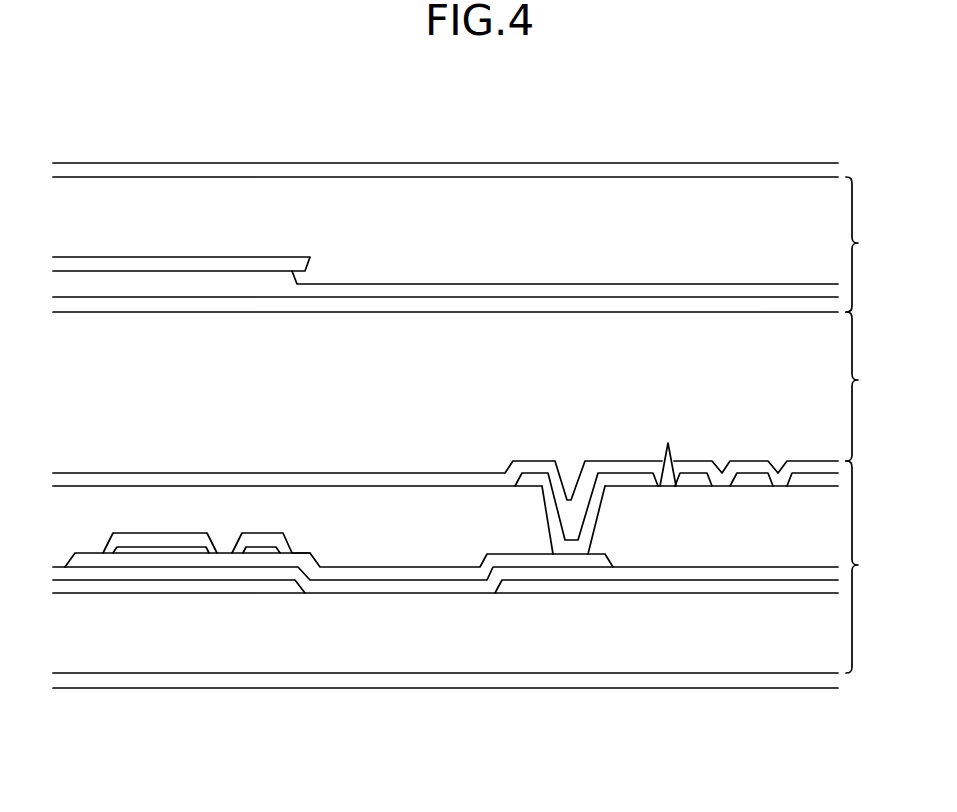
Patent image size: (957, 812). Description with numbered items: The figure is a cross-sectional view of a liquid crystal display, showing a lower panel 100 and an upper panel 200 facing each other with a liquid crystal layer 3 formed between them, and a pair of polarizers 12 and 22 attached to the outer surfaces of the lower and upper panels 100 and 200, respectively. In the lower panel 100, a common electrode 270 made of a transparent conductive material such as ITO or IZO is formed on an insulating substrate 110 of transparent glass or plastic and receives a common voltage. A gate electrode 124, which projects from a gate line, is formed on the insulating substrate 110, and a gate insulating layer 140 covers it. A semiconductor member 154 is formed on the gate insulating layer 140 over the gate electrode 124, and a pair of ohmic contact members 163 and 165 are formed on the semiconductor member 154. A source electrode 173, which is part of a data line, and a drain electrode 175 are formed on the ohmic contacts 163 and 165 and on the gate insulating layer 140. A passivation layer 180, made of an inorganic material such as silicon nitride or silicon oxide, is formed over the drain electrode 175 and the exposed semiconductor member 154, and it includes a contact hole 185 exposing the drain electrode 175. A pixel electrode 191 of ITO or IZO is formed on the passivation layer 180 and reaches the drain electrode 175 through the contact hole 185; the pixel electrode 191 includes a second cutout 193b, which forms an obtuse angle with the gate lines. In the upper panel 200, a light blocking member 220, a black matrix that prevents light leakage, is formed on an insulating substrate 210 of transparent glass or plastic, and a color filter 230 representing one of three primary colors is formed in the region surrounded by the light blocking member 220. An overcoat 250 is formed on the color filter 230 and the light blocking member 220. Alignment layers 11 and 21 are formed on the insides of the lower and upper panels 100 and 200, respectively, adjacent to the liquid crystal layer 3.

The polarizer 22 is at (822, 171).
The insulating substrate 210 is at (433, 195).
The light blocking member 220 is at (186, 268).
The color filter 230 is at (521, 274).
The overcoat 250 is at (627, 295).
The alignment layer 21 is at (757, 305).
The upper panel 200 is at (871, 244).
The liquid crystal layer 3 is at (862, 386).
The lower panel 100 is at (871, 567).
The alignment layer 11 is at (440, 478).
The pixel electrode 191 is at (610, 495).
The second cutout 193b is at (668, 450).
The contact hole 185 is at (553, 510).
The passivation layer 180 is at (378, 510).
The drain electrode 175 is at (290, 546).
The source electrode 173 is at (137, 540).
The ohmic contact member 163 is at (165, 546).
The ohmic contact member 165 is at (253, 546).
The semiconductor member 154 is at (163, 560).
The gate insulating layer 140 is at (400, 585).
The gate electrode 124 is at (230, 588).
The common electrode 270 is at (645, 585).
The insulating substrate 110 is at (497, 655).
The polarizer 12 is at (822, 684).